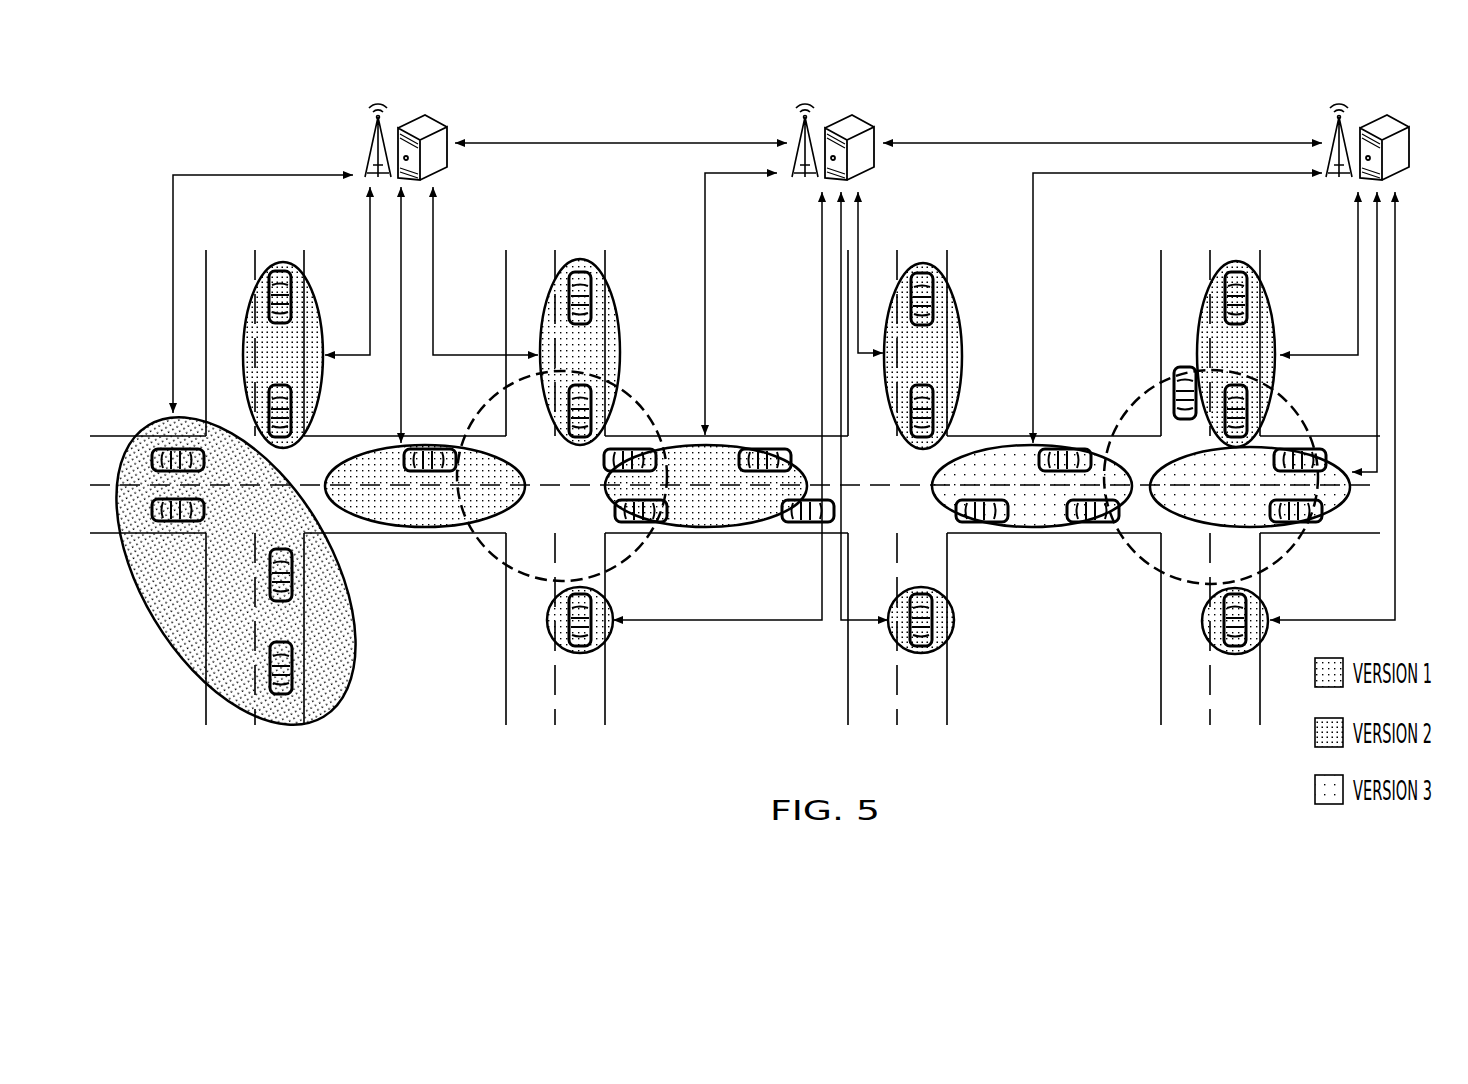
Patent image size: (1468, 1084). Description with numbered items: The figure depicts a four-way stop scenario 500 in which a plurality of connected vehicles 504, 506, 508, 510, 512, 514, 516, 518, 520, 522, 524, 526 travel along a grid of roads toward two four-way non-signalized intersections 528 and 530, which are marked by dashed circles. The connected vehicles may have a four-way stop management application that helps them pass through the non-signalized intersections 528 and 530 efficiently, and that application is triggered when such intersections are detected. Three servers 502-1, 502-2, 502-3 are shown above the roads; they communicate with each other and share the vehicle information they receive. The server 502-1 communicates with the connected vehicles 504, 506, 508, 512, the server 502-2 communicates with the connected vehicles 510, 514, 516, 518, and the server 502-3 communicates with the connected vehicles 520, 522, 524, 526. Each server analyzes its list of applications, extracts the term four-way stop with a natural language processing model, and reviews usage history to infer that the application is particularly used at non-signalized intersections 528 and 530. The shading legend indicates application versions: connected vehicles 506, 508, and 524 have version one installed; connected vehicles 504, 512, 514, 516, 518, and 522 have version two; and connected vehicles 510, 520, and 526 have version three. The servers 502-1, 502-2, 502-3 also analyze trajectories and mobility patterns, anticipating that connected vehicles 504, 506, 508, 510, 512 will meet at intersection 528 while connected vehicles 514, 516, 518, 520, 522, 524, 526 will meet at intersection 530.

The 4-way stop scenario 500 is at (160, 132).
The server 502-1 is at (437, 115).
The server 502-2 is at (866, 118).
The server 502-3 is at (1402, 118).
The connected vehicle 504 is at (356, 626).
The connected vehicle 506 is at (285, 262).
The connected vehicle 508 is at (441, 530).
The connected vehicle 510 is at (613, 634).
The connected vehicle 512 is at (583, 260).
The connected vehicle 514 is at (703, 529).
The connected vehicle 516 is at (923, 263).
The connected vehicle 518 is at (955, 622).
The connected vehicle 520 is at (1033, 529).
The connected vehicle 522 is at (1234, 262).
The connected vehicle 524 is at (1267, 607).
The connected vehicle 526 is at (1336, 512).
The 4-way non-signalized intersection 528 is at (640, 556).
The 4-way non-signalized intersection 530 is at (1142, 563).